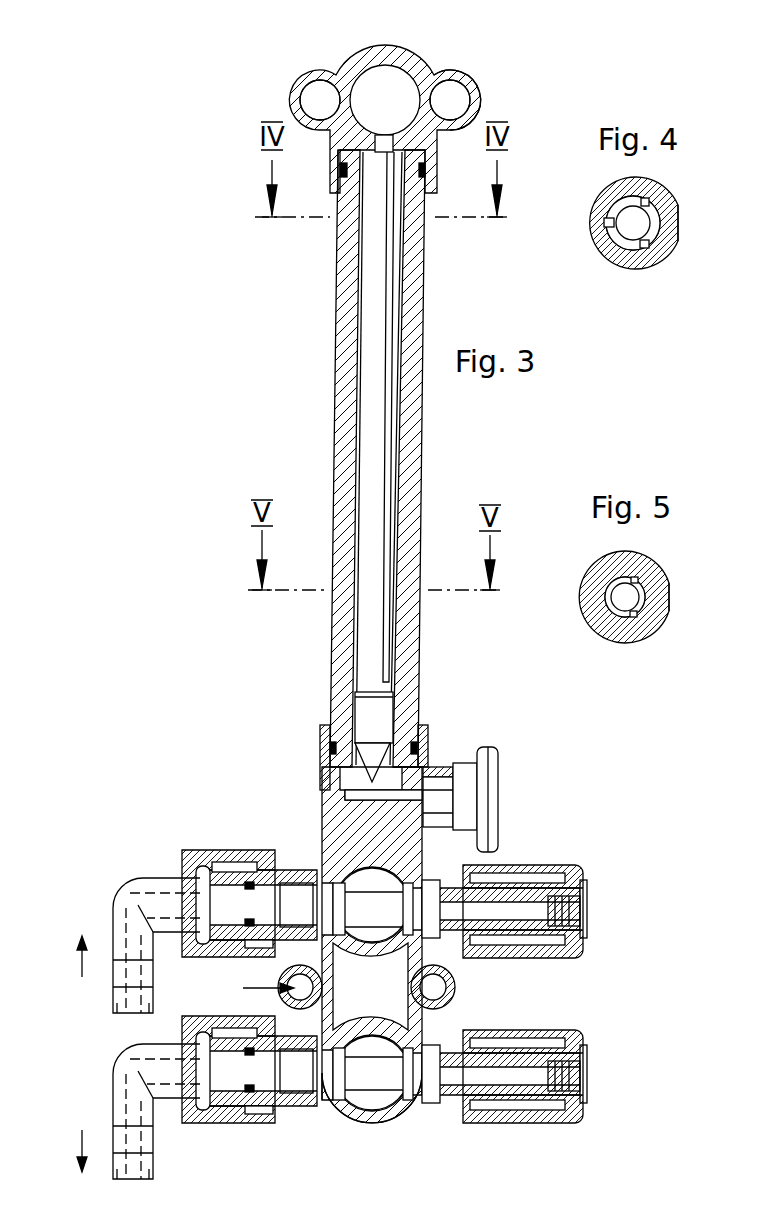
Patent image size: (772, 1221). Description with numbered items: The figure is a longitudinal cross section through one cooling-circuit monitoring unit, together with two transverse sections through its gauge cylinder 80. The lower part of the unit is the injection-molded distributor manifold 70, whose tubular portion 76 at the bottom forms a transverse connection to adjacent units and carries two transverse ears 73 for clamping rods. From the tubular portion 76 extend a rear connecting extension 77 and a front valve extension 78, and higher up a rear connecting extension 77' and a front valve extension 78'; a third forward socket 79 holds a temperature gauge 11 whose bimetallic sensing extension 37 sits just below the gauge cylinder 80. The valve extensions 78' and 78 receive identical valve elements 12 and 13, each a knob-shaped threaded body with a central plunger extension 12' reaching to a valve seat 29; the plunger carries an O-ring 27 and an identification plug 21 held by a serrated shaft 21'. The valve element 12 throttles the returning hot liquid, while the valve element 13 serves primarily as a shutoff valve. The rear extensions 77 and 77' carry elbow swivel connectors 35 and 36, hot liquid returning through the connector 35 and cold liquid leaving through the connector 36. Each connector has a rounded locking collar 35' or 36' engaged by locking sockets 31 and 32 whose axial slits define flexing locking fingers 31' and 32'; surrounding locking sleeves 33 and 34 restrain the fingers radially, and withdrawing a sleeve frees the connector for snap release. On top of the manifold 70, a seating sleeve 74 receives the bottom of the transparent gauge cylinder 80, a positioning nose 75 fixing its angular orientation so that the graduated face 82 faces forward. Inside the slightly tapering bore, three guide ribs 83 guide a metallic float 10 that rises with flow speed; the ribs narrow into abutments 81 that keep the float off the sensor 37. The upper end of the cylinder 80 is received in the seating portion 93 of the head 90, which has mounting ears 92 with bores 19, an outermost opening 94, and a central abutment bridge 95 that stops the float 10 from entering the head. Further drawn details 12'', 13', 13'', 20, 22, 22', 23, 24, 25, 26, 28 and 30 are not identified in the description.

In FIG. 3, the float 10 is at (378, 707).
In FIG. 4, the float 10 is at (637, 225).
In FIG. 5, the float 10 is at (632, 597).
In FIG. 3, the temperature gauge 11 is at (490, 775).
In FIG. 3, the valve element 12 is at (548, 896).
In FIG. 3, the plunger extension 12' is at (628, 886).
In FIG. 3, the ball valve element 12'' is at (372, 882).
In FIG. 3, the valve element 13 is at (548, 1056).
In FIG. 3, the conduit end cap 13' is at (628, 1044).
In FIG. 3, the ball valve element 13'' is at (372, 1049).
In FIG. 3, the bores 19 is at (452, 97).
In FIG. 3, the sealing ring 20 is at (340, 170).
In FIG. 3, the identification plug 21 is at (611, 927).
In FIG. 3, the serrated shaft 21' is at (616, 910).
In FIG. 3, the threaded insert 22 is at (611, 1087).
In FIG. 3, the thread 22' is at (616, 1070).
In FIG. 3, the groove 23 is at (480, 878).
In FIG. 3, the groove 24 is at (515, 1050).
In FIG. 3, the flange 25 is at (432, 890).
In FIG. 3, the flange 26 is at (440, 1050).
In FIG. 3, the O-ring 27 is at (427, 937).
In FIG. 3, the valve seat 28 is at (418, 1107).
In FIG. 3, the valve seat 29 is at (337, 903).
In FIG. 3, the bore 30 is at (337, 1070).
In FIG. 3, the locking socket 31 is at (258, 863).
In FIG. 3, the locking fingers 31' is at (175, 865).
In FIG. 3, the locking socket 32 is at (258, 1044).
In FIG. 3, the locking fingers 32' is at (148, 1060).
In FIG. 3, the locking sleeve 33 is at (222, 858).
In FIG. 3, the locking sleeve 34 is at (205, 1030).
In FIG. 3, the swivel connector 35 is at (120, 920).
In FIG. 3, the locking collar 35' is at (146, 900).
In FIG. 3, the swivel connector 36 is at (126, 1111).
In FIG. 3, the locking collar 36' is at (127, 1106).
In FIG. 3, the sensing extension 37 is at (360, 797).
In FIG. 3, the distributor manifold 70 is at (252, 976).
In FIG. 3, the transverse ears 73 is at (456, 990).
In FIG. 3, the seating sleeve 74 is at (322, 747).
In FIG. 3, the positioning nose 75 is at (397, 762).
In FIG. 3, the tubular portion 76 is at (365, 1113).
In FIG. 3, the connecting extension 77 is at (295, 1126).
In FIG. 3, the connecting extension 77' is at (344, 945).
In FIG. 3, the valve extension 78 is at (523, 1106).
In FIG. 3, the valve extension 78' is at (536, 885).
In FIG. 3, the socket 79 is at (435, 773).
In FIG. 3, the gauge cylinder 80 is at (420, 432).
In FIG. 4, the gauge cylinder 80 is at (640, 255).
In FIG. 5, the gauge cylinder 80 is at (598, 605).
In FIG. 3, the abutments 81 is at (346, 763).
In FIG. 4, the graduated face 82 is at (680, 238).
In FIG. 5, the graduated face 82 is at (672, 610).
In FIG. 3, the guide ribs 83 is at (360, 262).
In FIG. 4, the guide ribs 83 is at (608, 227).
In FIG. 5, the guide ribs 83 is at (603, 593).
In FIG. 3, the head 90 is at (322, 48).
In FIG. 3, the mounting ears 92 is at (468, 100).
In FIG. 3, the seating portion 93 is at (339, 150).
In FIG. 3, the outermost opening 94 is at (362, 60).
In FIG. 3, the central abutment bridge 95 is at (385, 143).